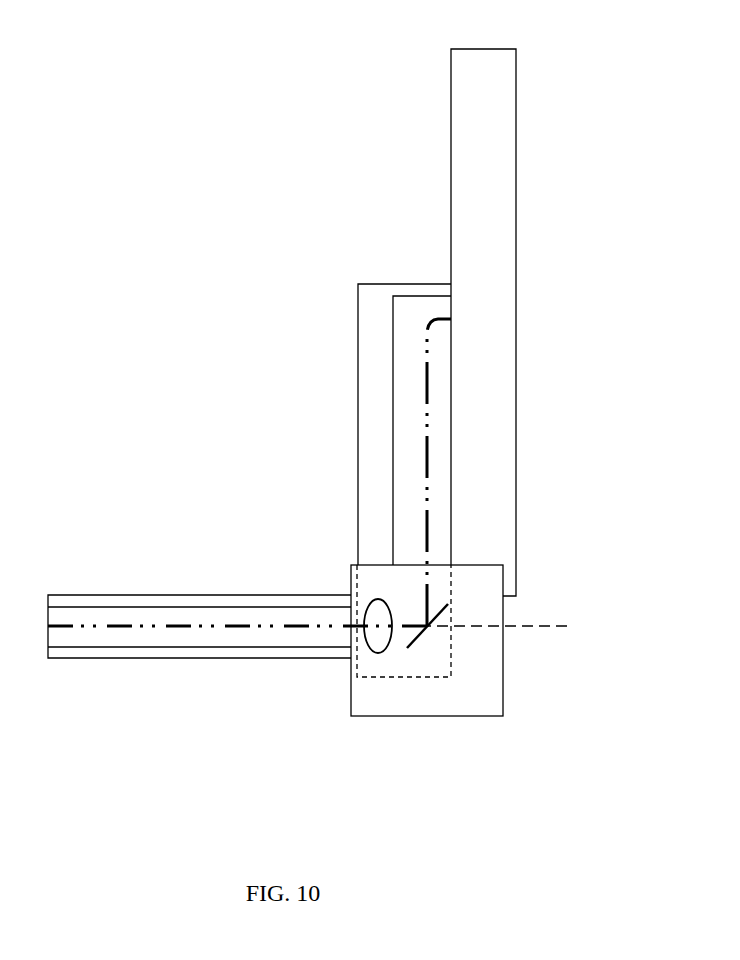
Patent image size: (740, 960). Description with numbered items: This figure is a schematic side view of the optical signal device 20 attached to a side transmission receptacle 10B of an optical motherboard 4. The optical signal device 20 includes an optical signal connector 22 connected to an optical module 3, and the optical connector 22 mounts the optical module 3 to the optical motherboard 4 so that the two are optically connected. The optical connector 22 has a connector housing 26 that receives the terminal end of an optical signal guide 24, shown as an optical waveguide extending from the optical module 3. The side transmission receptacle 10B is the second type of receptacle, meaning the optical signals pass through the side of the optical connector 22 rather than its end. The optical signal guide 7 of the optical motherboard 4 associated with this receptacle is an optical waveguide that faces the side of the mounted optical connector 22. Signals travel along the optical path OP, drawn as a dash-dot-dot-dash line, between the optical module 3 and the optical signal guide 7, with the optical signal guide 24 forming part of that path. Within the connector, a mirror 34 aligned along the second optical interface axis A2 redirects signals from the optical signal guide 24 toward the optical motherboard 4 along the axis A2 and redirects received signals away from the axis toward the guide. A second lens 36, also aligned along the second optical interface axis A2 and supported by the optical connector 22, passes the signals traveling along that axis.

The optical module 3 is at (473, 67).
The optical signal device 20 is at (321, 133).
The optical signal connector 22 is at (341, 264).
The connector housing 26 is at (357, 317).
The optical signal guide 24 is at (406, 374).
The optical path OP is at (423, 457).
The second optical interface axis A2 is at (527, 625).
The optical motherboard 4 is at (198, 521).
The optical signal guide 7 is at (129, 637).
The side transmission receptacle 10B is at (526, 662).
The mirror 34 is at (415, 640).
The second lens 36 is at (380, 638).